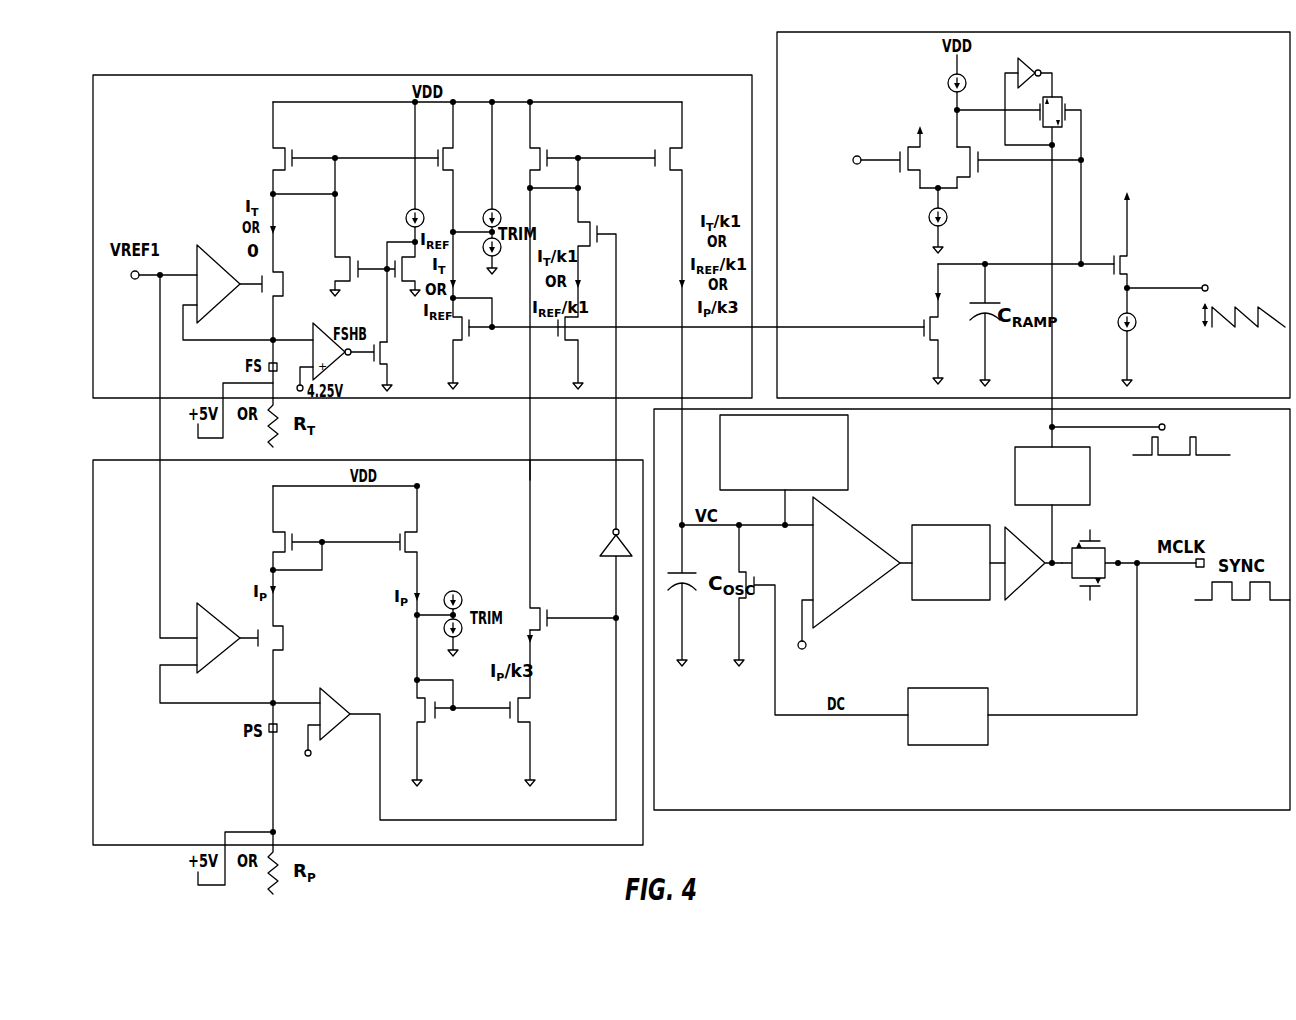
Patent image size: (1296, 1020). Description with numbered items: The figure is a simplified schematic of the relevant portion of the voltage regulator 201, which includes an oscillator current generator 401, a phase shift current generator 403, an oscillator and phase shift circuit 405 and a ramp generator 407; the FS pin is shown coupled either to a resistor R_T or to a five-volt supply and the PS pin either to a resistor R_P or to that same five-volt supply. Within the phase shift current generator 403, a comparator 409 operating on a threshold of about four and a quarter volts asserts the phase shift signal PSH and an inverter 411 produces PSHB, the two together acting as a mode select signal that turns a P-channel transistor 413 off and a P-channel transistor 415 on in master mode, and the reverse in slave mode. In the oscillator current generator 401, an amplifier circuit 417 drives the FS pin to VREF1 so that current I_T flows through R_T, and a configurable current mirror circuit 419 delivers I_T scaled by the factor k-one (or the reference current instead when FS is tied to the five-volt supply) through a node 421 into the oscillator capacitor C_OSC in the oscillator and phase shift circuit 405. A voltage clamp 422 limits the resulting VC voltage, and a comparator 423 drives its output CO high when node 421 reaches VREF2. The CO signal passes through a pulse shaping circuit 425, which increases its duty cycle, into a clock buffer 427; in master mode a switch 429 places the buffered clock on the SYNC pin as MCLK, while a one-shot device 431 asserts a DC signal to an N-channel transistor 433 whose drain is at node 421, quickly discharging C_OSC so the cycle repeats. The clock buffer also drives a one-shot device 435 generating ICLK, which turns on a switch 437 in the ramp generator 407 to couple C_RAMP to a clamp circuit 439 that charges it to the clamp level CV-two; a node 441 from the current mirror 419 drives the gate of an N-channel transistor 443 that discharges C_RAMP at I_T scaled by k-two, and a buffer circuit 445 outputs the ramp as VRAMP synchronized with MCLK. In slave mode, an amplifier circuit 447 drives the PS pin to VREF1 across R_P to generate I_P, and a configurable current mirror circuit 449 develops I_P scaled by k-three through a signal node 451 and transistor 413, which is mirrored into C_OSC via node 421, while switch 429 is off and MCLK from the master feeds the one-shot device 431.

The voltage regulator 201 is at (540, 56).
The oscillator current generator 401 is at (170, 185).
The phase shift current generator 403 is at (170, 835).
The oscillator and phase shift circuit 405 is at (1078, 786).
The ramp generator 407 is at (868, 95).
The comparator 409 is at (458, 745).
The inverter 411 is at (604, 673).
The P-channel transistor 413 is at (574, 514).
The P-channel transistor 415 is at (615, 363).
The amplifier circuit 417 is at (229, 284).
The configurable current mirror circuit 419 is at (375, 151).
The node 421 is at (684, 378).
The voltage clamp 422 is at (798, 483).
The comparator 423 is at (850, 591).
The pulse shaping circuit 425 is at (963, 596).
The clock buffer 427 is at (1030, 572).
The switch 429 is at (1099, 571).
The one-shot device 431 is at (962, 738).
The N-channel transistor 433 is at (821, 620).
The one-shot device 435 is at (1068, 495).
The switch 437 is at (1049, 162).
The clamp circuit 439 is at (1025, 191).
The node 441 is at (696, 316).
The N-channel transistor 443 is at (993, 320).
The buffer circuit 445 is at (1199, 289).
The amplifier circuit 447 is at (227, 639).
The configurable current mirror circuit 449 is at (343, 615).
The signal node 451 is at (530, 507).